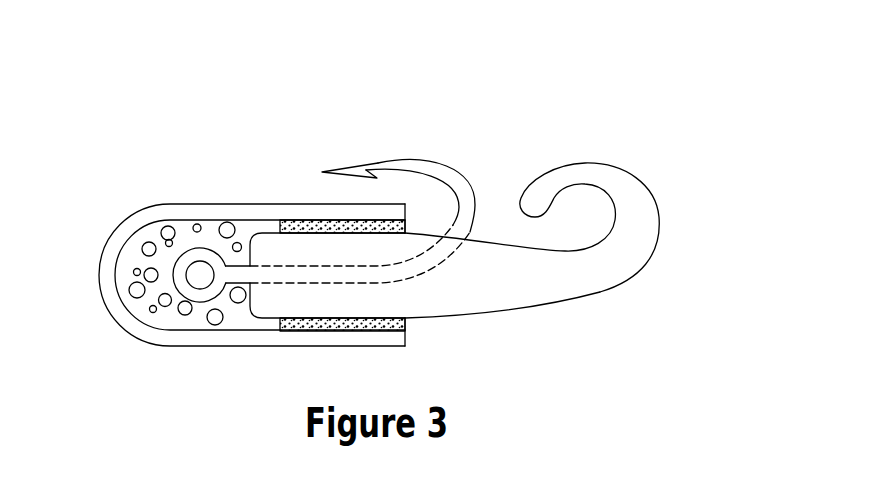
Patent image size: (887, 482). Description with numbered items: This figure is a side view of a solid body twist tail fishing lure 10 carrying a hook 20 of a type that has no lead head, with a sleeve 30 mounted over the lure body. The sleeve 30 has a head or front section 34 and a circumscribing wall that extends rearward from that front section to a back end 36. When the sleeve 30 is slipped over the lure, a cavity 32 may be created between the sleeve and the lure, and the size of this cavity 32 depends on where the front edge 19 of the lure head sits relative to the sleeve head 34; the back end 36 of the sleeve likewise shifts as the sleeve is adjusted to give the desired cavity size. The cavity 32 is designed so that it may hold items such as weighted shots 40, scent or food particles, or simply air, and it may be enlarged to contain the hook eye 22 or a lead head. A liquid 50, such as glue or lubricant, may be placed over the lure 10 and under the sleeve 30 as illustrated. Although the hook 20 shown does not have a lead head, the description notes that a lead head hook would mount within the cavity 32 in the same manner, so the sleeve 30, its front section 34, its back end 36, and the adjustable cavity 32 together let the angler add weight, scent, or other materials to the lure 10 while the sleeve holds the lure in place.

The fishing lure 10 is at (663, 122).
The front edge of the lure head 19 is at (247, 295).
The hook 20 is at (407, 112).
The eye 22 is at (192, 252).
The sleeve 30 is at (93, 195).
The cavity 32 is at (243, 322).
The head or front section of the sleeve 34 is at (112, 302).
The back end of the sleeve 36 is at (408, 338).
The weighted shots 40 is at (180, 313).
The liquid 50 is at (408, 320).